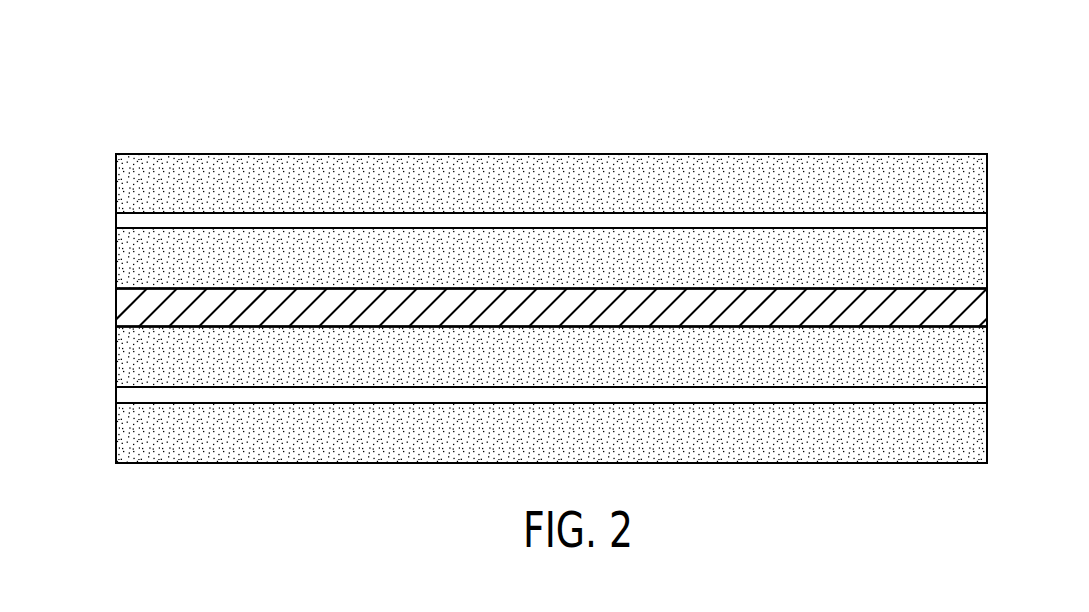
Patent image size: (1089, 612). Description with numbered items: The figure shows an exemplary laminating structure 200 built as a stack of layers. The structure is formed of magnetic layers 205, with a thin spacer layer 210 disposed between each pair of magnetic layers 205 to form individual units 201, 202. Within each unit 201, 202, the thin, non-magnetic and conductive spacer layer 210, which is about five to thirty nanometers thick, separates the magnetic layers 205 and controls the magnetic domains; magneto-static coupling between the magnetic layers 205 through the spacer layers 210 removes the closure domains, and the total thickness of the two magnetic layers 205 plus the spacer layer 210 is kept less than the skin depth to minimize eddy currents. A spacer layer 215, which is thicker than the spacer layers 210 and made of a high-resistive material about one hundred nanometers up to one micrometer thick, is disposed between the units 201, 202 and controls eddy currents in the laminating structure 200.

The laminating structure 200 is at (215, 91).
The unit 201 is at (996, 155).
The unit 202 is at (996, 327).
The magnetic layer 205 is at (123, 188).
The spacer layer 210 is at (123, 222).
The spacer layer 215 is at (123, 307).